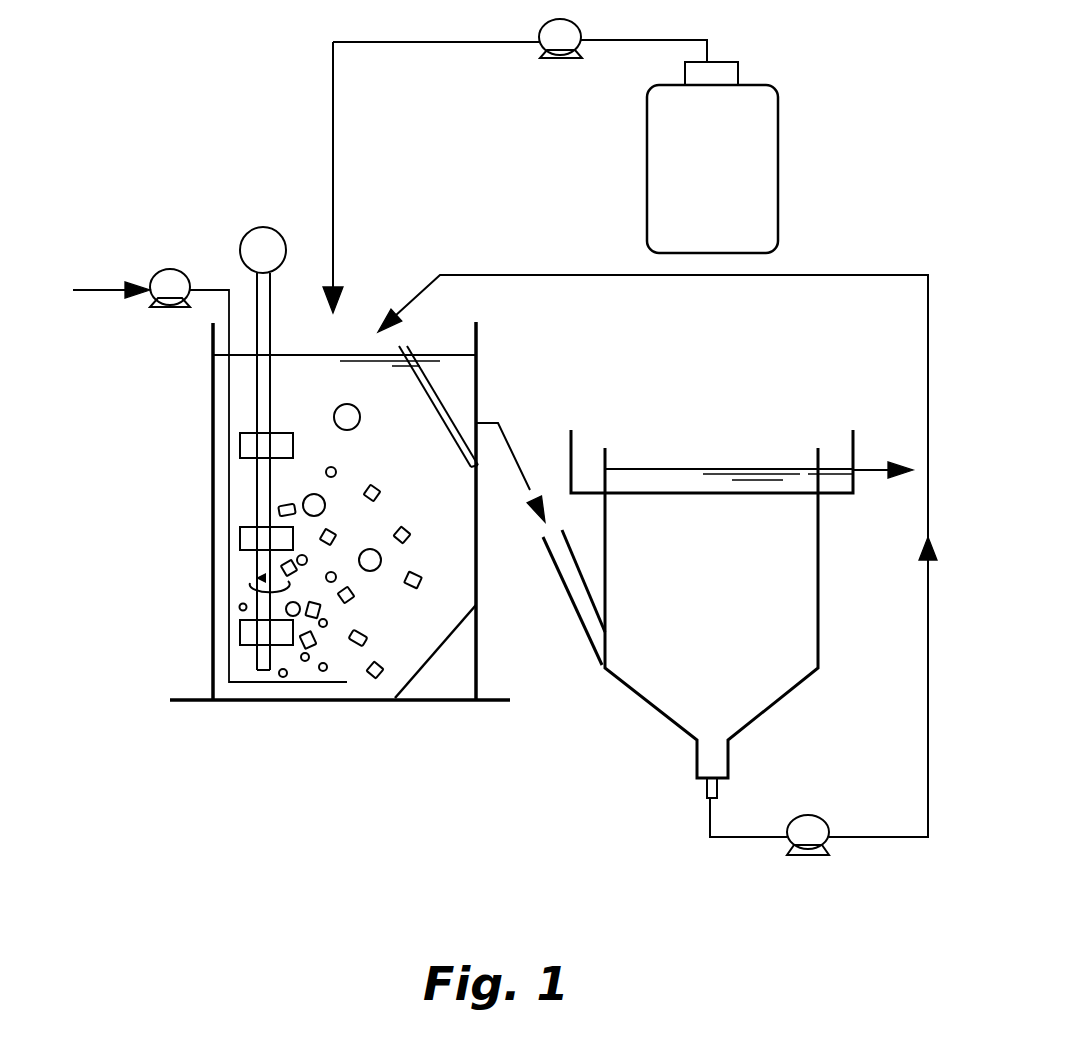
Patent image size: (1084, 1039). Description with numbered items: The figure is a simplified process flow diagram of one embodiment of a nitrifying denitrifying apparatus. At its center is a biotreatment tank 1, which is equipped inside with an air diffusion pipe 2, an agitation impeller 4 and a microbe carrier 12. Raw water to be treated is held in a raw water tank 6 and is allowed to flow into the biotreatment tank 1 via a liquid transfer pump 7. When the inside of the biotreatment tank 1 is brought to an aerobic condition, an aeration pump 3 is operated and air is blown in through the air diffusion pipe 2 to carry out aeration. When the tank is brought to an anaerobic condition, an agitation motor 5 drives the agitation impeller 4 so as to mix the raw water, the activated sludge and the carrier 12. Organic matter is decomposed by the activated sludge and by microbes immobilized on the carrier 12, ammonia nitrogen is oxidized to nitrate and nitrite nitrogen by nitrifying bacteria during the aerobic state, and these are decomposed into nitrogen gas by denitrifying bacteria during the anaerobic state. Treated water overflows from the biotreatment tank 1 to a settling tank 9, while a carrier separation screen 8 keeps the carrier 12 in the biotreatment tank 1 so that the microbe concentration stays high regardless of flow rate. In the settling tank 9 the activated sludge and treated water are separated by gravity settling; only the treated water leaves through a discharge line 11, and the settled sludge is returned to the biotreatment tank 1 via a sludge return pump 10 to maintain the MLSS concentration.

The biotreatment tank 1 is at (213, 578).
The air diffusion pipe 2 is at (297, 682).
The aeration pump 3 is at (170, 266).
The agitation impeller 4 is at (257, 468).
The agitation motor 5 is at (262, 227).
The raw water tank 6 is at (679, 146).
The liquid transfer pump 7 is at (560, 63).
The carrier separation screen 8 is at (448, 405).
The settling tank 9 is at (712, 614).
The sludge return pump 10 is at (812, 815).
The discharge line 11 is at (870, 468).
The carrier 12 is at (428, 578).